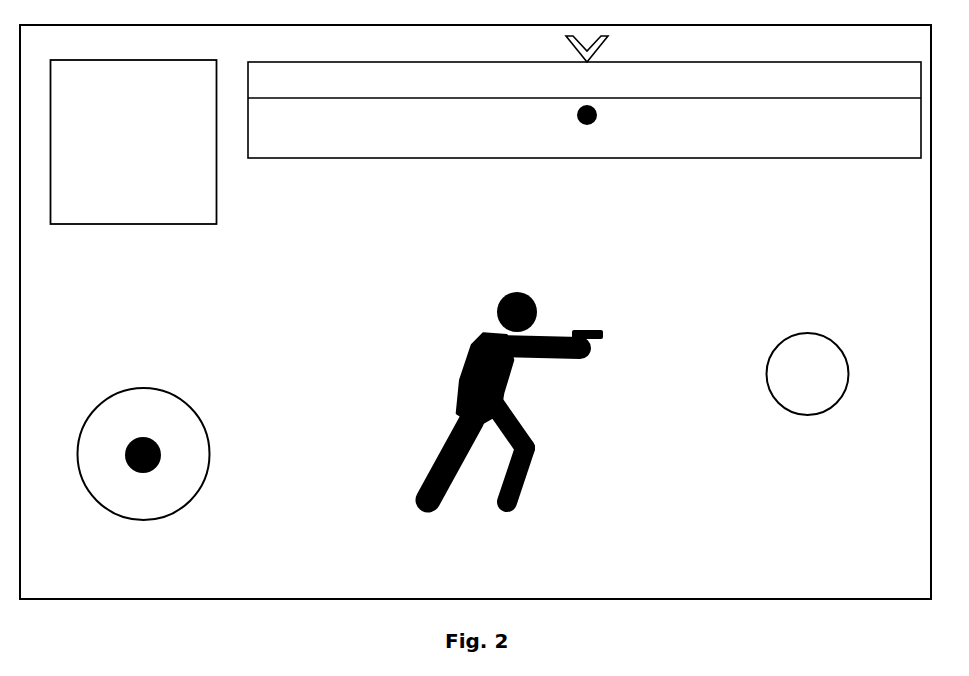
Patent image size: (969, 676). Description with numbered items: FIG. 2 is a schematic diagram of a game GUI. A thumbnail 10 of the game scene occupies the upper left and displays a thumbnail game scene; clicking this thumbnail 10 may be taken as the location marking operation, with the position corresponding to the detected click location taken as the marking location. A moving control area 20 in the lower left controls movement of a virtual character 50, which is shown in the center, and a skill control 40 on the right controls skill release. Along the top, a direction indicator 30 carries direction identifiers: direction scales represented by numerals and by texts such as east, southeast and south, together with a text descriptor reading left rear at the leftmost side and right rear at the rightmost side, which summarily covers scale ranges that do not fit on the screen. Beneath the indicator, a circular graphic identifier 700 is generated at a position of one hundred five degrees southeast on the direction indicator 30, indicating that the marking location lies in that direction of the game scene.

The thumbnail of the game scene 10 is at (217, 200).
The moving control area 20 is at (142, 385).
The direction indicator 30 is at (726, 62).
The skill control 40 is at (835, 407).
The virtual character 50 is at (520, 493).
The circular graphic identifier 700 is at (592, 124).